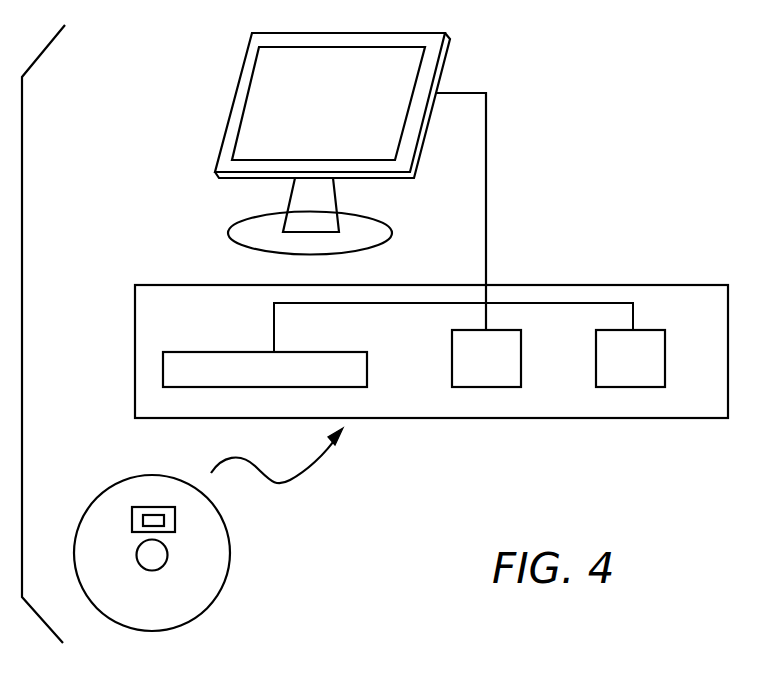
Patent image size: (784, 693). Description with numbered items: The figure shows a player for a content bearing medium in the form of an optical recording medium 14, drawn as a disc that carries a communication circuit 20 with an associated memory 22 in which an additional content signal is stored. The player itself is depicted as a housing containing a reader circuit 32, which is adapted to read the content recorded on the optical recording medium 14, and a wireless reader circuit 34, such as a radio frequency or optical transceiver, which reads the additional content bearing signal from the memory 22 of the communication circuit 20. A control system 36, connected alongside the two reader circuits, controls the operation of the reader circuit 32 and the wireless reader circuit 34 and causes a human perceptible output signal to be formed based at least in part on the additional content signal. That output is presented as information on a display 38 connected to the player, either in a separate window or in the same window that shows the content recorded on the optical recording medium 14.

The optical recording medium 14 is at (220, 597).
The communication circuit 20 is at (145, 507).
The memory 22 is at (164, 521).
The reader circuit 32 is at (223, 362).
The wireless reader circuit 34 is at (496, 372).
The control system 36 is at (640, 372).
The display 38 is at (228, 229).